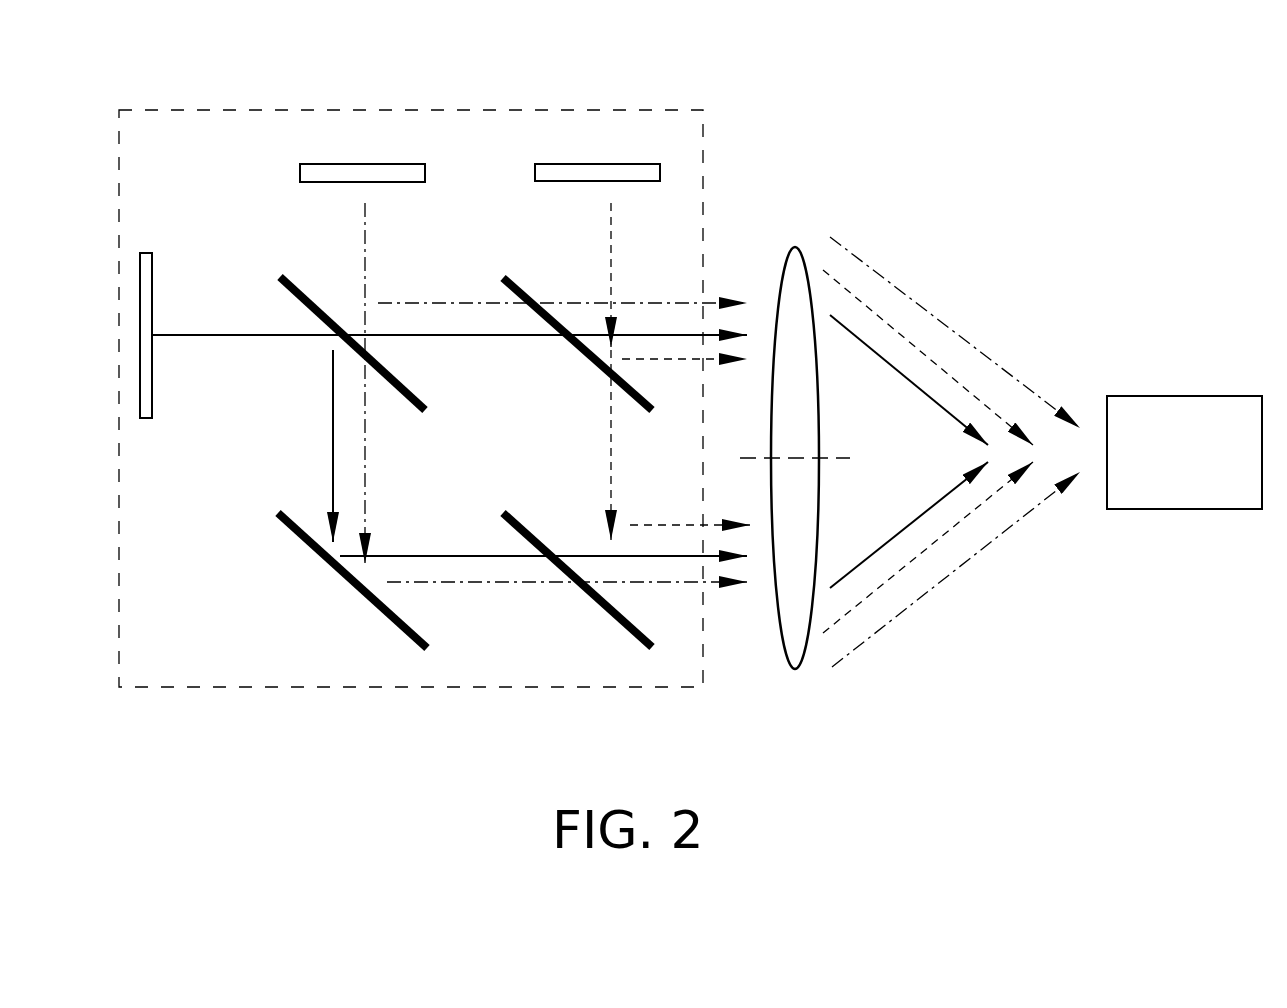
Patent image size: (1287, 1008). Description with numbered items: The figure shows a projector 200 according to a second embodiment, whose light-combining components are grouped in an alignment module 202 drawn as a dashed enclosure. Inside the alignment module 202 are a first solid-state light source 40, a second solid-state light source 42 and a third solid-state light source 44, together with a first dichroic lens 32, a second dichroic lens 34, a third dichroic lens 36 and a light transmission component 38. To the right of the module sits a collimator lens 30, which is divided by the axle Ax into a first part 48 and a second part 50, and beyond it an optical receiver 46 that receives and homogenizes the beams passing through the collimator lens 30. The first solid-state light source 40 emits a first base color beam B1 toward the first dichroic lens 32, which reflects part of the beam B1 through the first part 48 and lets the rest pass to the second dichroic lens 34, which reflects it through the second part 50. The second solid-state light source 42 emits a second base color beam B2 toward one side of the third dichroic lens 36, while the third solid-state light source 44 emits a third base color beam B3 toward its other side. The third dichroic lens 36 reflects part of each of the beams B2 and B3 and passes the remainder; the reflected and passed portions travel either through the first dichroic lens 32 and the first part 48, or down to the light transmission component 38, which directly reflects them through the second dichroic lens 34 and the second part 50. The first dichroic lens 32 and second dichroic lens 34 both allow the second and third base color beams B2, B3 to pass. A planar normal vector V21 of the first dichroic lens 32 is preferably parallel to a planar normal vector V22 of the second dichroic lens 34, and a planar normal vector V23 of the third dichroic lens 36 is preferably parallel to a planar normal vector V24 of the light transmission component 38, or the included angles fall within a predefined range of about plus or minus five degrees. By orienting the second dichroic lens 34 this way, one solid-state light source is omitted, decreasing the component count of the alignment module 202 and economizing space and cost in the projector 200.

The projector 200 is at (1045, 145).
The alignment module 202 is at (158, 108).
The third solid-state light source 44 is at (146, 254).
The second solid-state light source 42 is at (325, 165).
The first solid-state light source 40 is at (560, 165).
The third dichroic lens 36 is at (293, 297).
The first dichroic lens 32 is at (518, 283).
The light transmission component 38 is at (293, 533).
The second dichroic lens 34 is at (530, 527).
The collimator lens 30 is at (802, 459).
The first part 48 is at (795, 270).
The second part 50 is at (795, 648).
The optical receiver 46 is at (1204, 470).
The first base color beam B1 is at (680, 371).
The second base color beam B2 is at (556, 392).
The third base color beam B3 is at (449, 445).
The planar normal vector V21 is at (557, 323).
The planar normal vector V22 is at (547, 547).
The planar normal vector V23 is at (323, 312).
The planar normal vector V24 is at (385, 603).
The axle Ax is at (814, 462).